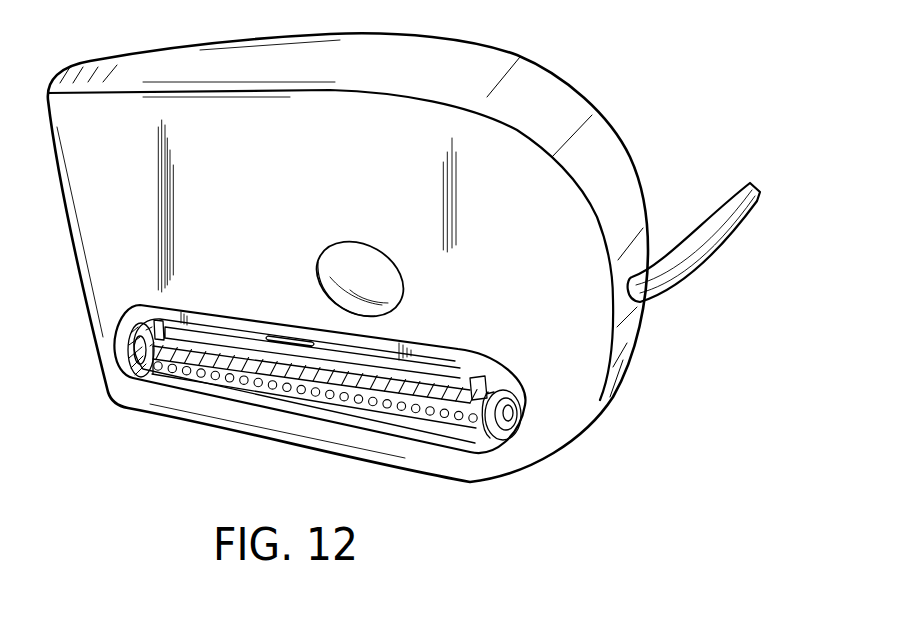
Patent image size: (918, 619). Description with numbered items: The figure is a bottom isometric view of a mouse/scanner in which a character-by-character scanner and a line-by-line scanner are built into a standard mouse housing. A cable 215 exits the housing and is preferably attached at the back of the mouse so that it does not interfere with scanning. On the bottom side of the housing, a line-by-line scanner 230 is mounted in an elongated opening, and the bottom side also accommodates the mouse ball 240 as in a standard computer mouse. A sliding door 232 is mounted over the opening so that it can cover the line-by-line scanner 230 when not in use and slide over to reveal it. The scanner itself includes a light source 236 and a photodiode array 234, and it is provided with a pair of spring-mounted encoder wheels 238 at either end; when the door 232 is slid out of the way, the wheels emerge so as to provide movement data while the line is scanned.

The cable 215 is at (742, 203).
The line-by-line scanner 230 is at (300, 396).
The sliding door 232 is at (254, 327).
The photodiode array 234 is at (209, 378).
The light source 236 is at (425, 377).
The encoder wheels 238 is at (128, 371).
The mouse ball 240 is at (395, 283).